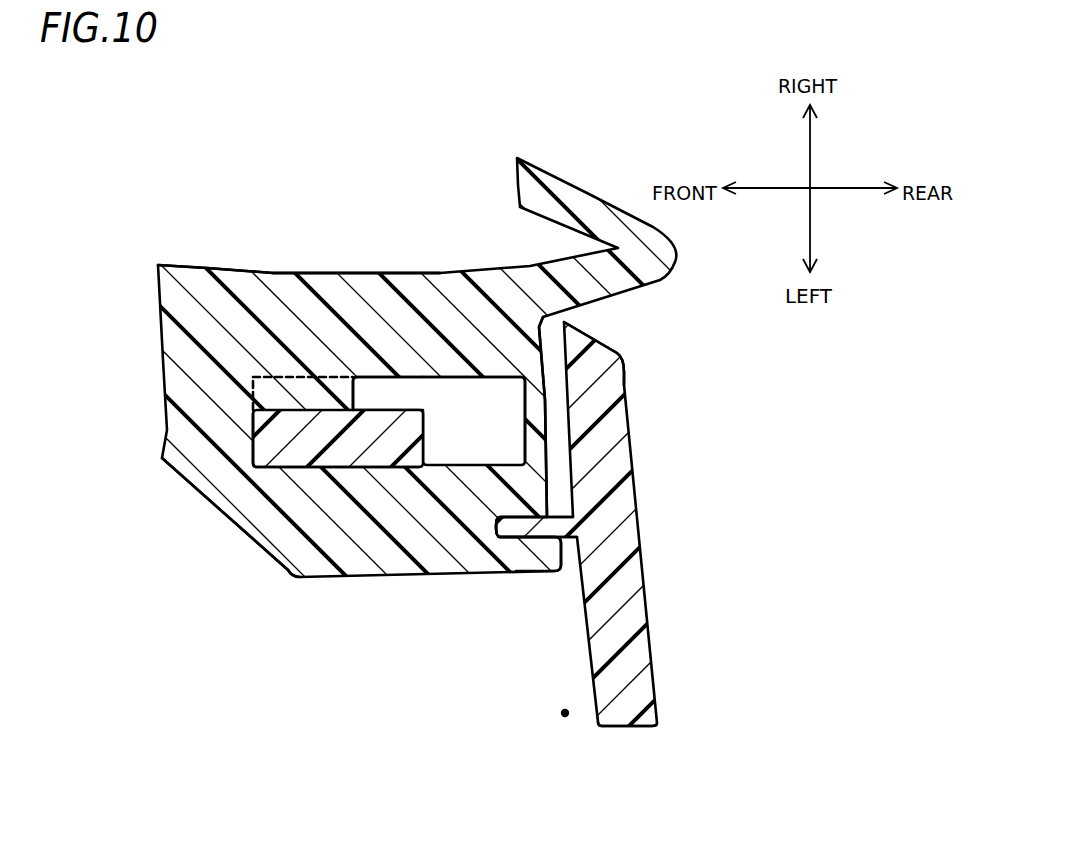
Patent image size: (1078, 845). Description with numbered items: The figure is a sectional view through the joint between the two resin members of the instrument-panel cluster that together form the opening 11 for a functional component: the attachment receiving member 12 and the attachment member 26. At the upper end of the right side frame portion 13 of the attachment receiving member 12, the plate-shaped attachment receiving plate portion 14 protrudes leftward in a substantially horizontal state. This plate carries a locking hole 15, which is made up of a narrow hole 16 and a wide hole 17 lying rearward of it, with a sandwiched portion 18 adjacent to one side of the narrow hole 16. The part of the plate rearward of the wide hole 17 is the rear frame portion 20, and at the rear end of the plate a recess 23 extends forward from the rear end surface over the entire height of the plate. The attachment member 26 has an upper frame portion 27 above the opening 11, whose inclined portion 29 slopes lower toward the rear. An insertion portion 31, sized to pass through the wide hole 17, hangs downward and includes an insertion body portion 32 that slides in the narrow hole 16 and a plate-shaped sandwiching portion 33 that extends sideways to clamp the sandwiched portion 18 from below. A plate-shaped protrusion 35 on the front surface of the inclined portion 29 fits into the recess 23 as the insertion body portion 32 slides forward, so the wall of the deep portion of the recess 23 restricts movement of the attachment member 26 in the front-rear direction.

The opening 11 is at (565, 717).
The attachment receiving member 12 is at (171, 229).
The right side frame portion 13 is at (241, 280).
The attachment receiving plate portion 14 is at (300, 557).
The locking hole 15 is at (452, 226).
The narrow hole 16 is at (297, 415).
The wide hole 17 is at (445, 396).
The sandwiched portion 18 is at (270, 388).
The rear frame portion 20 is at (540, 420).
The recess 23 is at (511, 541).
The attachment member 26 is at (676, 702).
The upper frame portion 27 is at (662, 460).
The inclined portion 29 is at (636, 578).
The insertion portion 31 is at (336, 535).
The insertion body portion 32 is at (377, 455).
The sandwiching portion 33 is at (421, 395).
The protrusion 35 is at (541, 540).